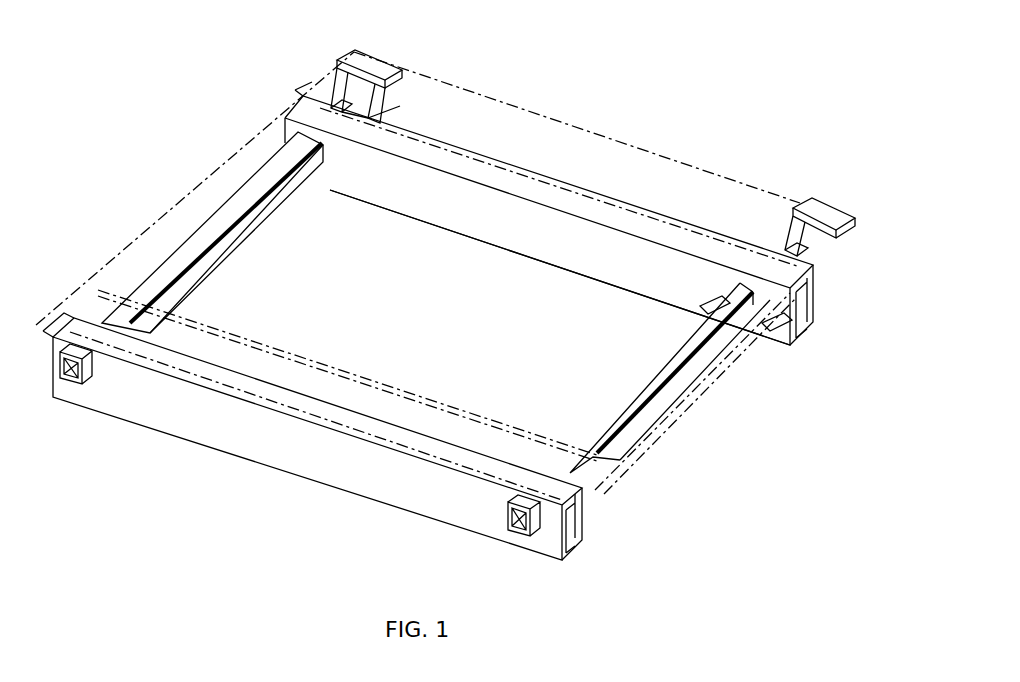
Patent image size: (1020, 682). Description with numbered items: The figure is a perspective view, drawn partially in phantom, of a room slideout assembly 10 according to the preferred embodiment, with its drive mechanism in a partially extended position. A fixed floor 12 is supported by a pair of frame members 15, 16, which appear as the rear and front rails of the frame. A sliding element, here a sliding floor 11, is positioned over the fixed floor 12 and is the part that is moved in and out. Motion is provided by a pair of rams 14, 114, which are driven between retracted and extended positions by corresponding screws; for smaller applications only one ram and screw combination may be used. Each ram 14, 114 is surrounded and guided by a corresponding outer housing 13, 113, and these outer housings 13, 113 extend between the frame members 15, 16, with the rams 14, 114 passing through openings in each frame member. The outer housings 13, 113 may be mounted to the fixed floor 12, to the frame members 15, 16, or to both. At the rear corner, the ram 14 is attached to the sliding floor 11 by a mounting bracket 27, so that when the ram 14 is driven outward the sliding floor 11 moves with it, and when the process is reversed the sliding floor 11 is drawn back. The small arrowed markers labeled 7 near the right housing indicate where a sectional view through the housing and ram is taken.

The room slideout assembly 10 is at (172, 188).
The sliding floor 11 is at (337, 80).
The ram 114 is at (390, 107).
The fixed floor 12 is at (280, 113).
The outer housing 113 is at (203, 240).
The outer housing 13 is at (650, 383).
The ram 14 is at (807, 240).
The mounting bracket 27 is at (833, 225).
The frame member 15 is at (487, 230).
The frame member 16 is at (373, 418).
The clip 7 is at (707, 312).